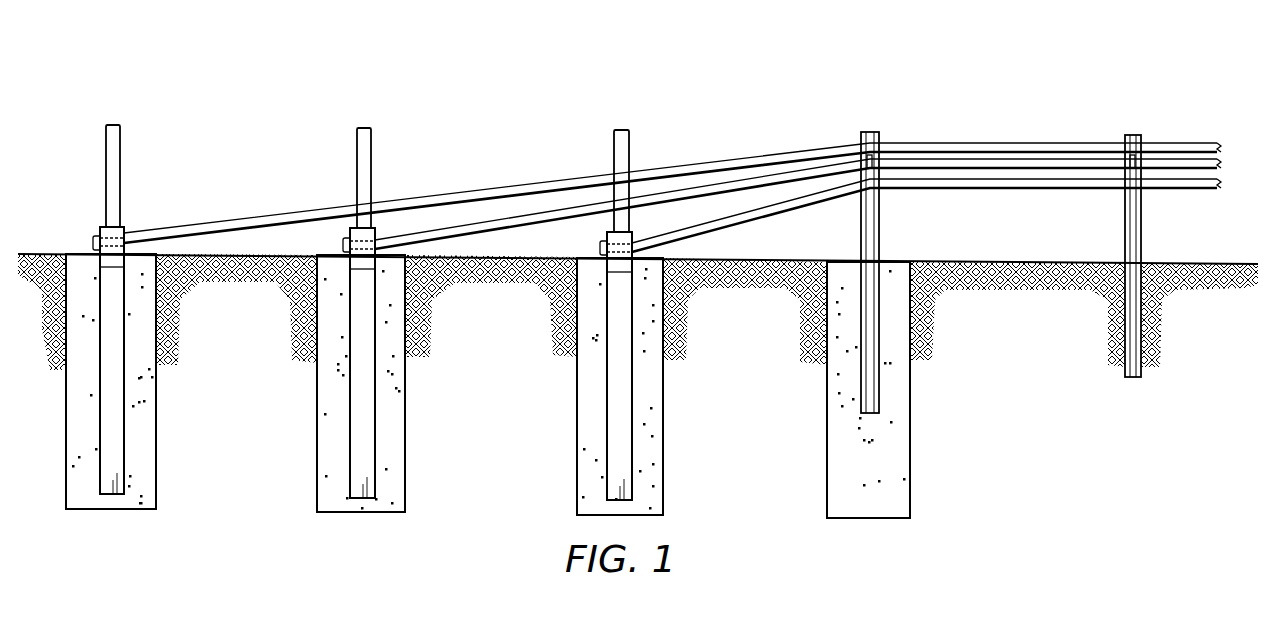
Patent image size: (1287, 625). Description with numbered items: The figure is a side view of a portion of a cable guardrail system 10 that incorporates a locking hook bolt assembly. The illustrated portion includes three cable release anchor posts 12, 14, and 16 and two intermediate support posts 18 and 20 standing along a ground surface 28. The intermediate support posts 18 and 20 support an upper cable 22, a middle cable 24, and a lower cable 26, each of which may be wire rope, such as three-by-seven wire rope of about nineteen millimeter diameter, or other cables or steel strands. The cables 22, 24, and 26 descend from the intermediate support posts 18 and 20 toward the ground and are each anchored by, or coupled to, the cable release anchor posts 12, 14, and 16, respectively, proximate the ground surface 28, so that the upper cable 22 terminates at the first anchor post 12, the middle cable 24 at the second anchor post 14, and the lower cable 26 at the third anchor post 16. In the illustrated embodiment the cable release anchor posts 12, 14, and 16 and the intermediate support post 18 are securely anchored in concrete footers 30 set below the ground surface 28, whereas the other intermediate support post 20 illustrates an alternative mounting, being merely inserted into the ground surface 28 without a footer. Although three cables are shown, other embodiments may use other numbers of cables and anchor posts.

The cable guardrail system 10 is at (258, 82).
The cable release anchor post 12 is at (106, 142).
The cable release anchor post 14 is at (357, 149).
The cable release anchor post 16 is at (630, 145).
The intermediate support post 18 is at (880, 229).
The intermediate support post 20 is at (1142, 231).
The upper cable 22 is at (988, 142).
The middle cable 24 is at (1032, 156).
The lower cable 26 is at (1013, 190).
The ground surface 28 is at (1226, 264).
The concrete footer 30 is at (142, 452).